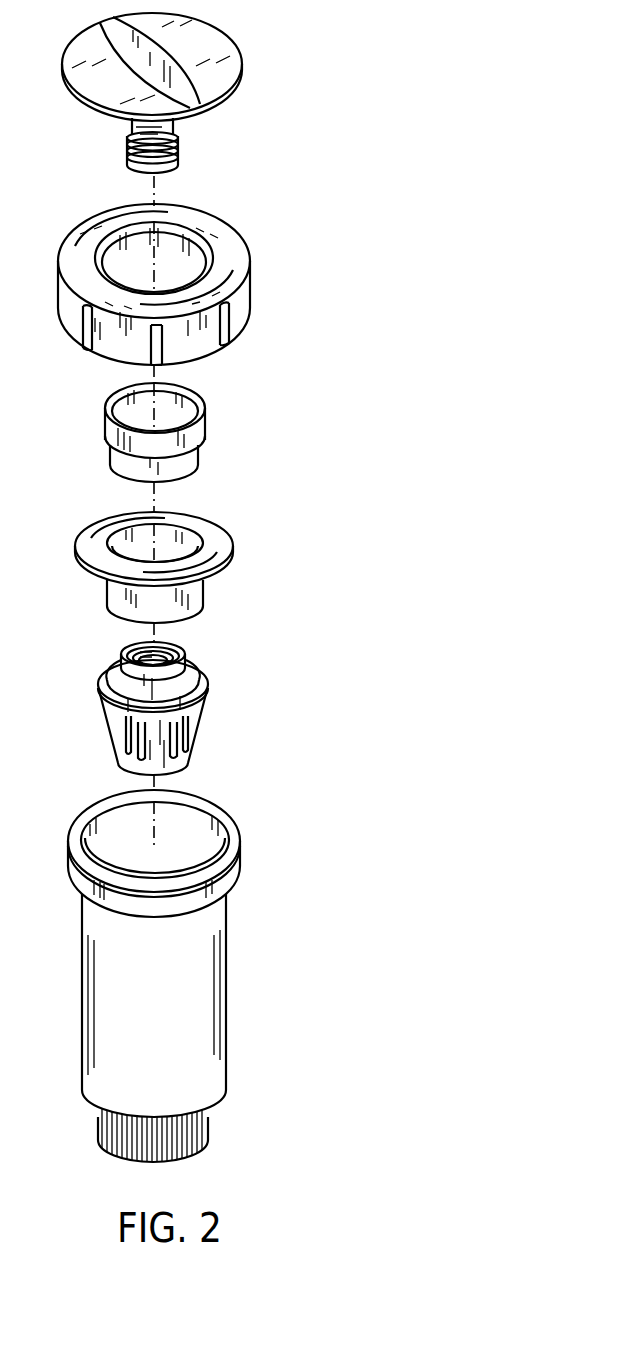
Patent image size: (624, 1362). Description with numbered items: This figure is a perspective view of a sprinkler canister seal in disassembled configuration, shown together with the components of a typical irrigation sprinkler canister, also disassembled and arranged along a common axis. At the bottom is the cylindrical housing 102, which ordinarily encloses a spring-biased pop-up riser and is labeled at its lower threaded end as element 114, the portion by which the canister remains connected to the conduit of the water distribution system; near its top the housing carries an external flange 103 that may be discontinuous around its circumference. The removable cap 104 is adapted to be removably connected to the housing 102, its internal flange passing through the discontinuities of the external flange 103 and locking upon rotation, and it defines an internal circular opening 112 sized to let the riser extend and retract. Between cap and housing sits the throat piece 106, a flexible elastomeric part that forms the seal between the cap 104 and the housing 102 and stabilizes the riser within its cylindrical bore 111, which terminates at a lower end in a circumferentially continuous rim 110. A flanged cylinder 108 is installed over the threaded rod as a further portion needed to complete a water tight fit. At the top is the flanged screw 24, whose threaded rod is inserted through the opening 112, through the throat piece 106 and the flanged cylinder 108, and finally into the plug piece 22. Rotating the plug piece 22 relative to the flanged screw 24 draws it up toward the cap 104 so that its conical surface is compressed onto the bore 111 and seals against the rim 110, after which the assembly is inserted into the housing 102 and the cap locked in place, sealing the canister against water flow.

The flanged screw 24 is at (243, 65).
The removable cap 104 is at (204, 284).
The internal circular opening 112 is at (180, 276).
The flanged cylinder 108 is at (205, 420).
The throat piece 106 is at (197, 539).
The cylindrical bore 111 is at (175, 540).
The rim 110 is at (192, 612).
The plug piece 22 is at (207, 683).
The external flange 103 is at (242, 858).
The cylindrical housing 102 is at (227, 1020).
The threaded base 114 is at (210, 1123).